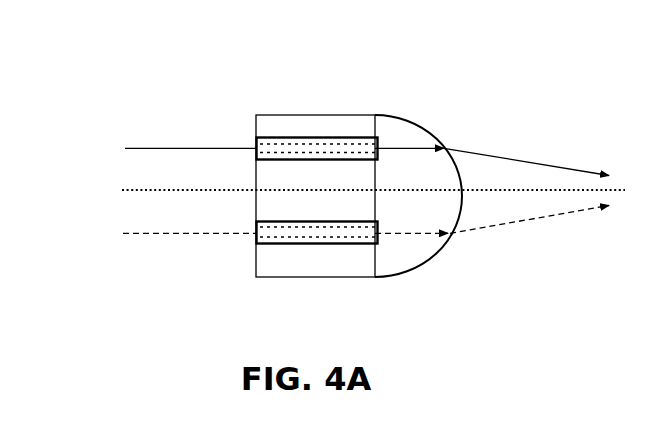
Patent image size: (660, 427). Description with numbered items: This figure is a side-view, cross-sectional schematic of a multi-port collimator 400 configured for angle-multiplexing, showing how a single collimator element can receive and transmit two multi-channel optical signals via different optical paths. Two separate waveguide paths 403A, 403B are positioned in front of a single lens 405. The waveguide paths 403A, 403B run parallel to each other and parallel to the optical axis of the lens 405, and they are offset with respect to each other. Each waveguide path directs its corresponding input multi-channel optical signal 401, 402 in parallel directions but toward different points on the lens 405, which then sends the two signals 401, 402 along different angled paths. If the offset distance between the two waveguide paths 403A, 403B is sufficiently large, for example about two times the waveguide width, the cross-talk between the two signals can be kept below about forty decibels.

The multi-port collimator 400 is at (118, 74).
The multi-channel optical signal 401 is at (172, 127).
The multi-channel optical signal 402 is at (172, 236).
The waveguide path 403A is at (300, 137).
The waveguide path 403B is at (292, 244).
The lens 405 is at (423, 127).